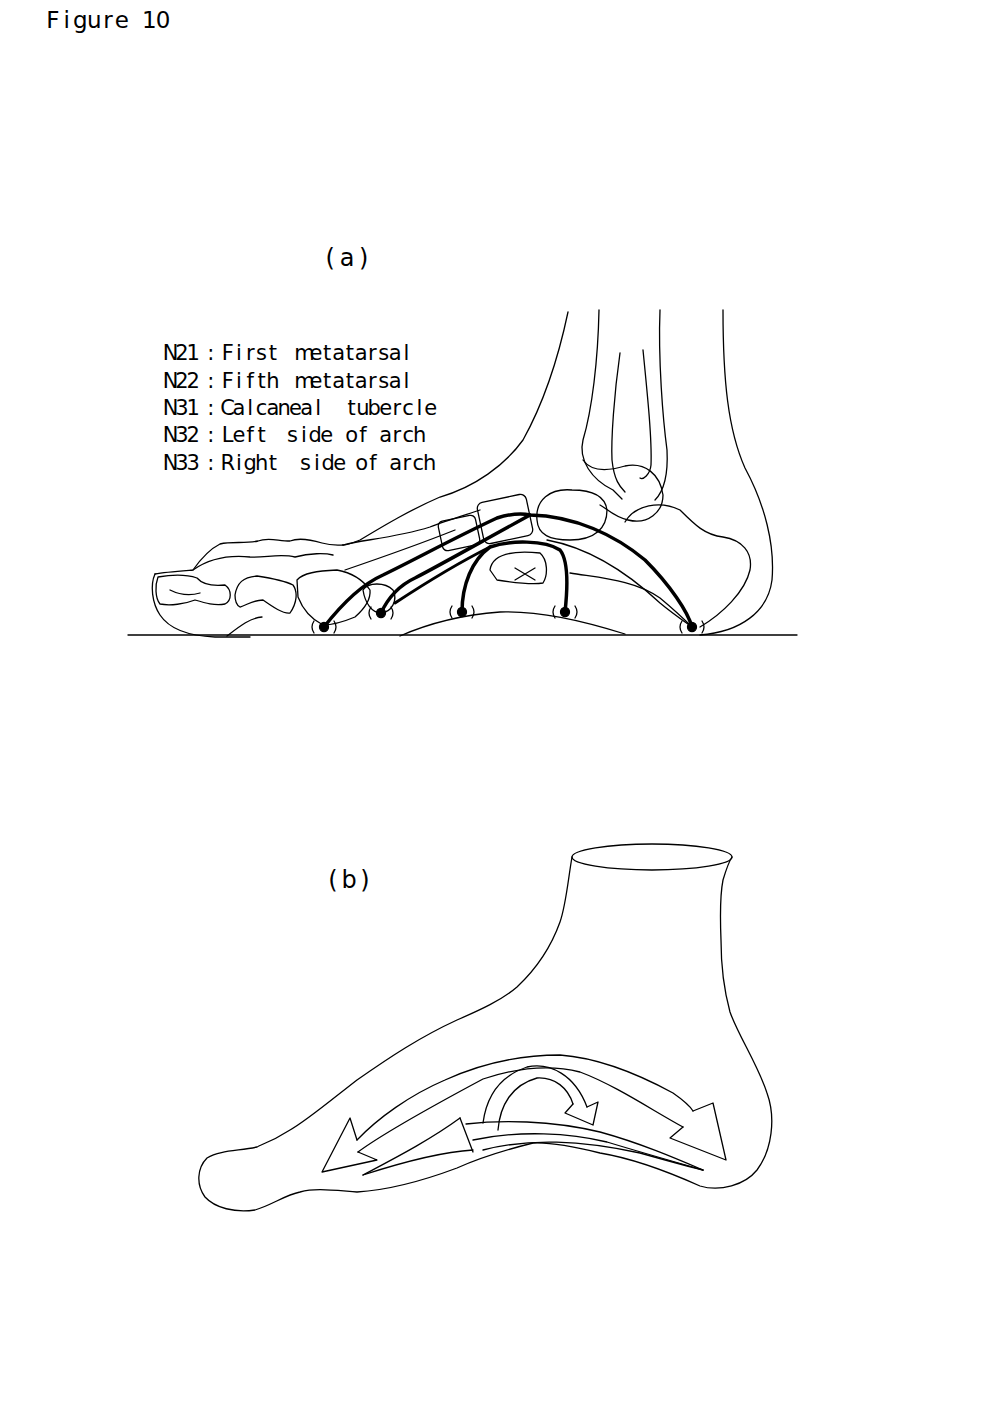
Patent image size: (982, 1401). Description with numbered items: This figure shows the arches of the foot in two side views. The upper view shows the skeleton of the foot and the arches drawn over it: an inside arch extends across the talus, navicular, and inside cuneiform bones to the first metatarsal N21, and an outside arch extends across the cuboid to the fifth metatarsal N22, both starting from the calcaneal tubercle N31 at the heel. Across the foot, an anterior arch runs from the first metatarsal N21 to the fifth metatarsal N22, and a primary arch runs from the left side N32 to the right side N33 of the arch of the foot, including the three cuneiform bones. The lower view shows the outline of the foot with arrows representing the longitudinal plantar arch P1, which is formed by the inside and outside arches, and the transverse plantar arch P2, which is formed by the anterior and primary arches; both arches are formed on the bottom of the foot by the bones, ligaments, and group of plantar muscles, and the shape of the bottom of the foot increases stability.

The first metatarsal N21 is at (323, 634).
The fifth metatarsal N22 is at (380, 619).
The calcaneal tubercle N31 is at (689, 634).
The left side of arch N32 is at (460, 620).
The right side of arch N33 is at (563, 620).
The longitudinal plantar arch P1 is at (417, 1107).
The transverse plantar arch P2 is at (497, 1095).